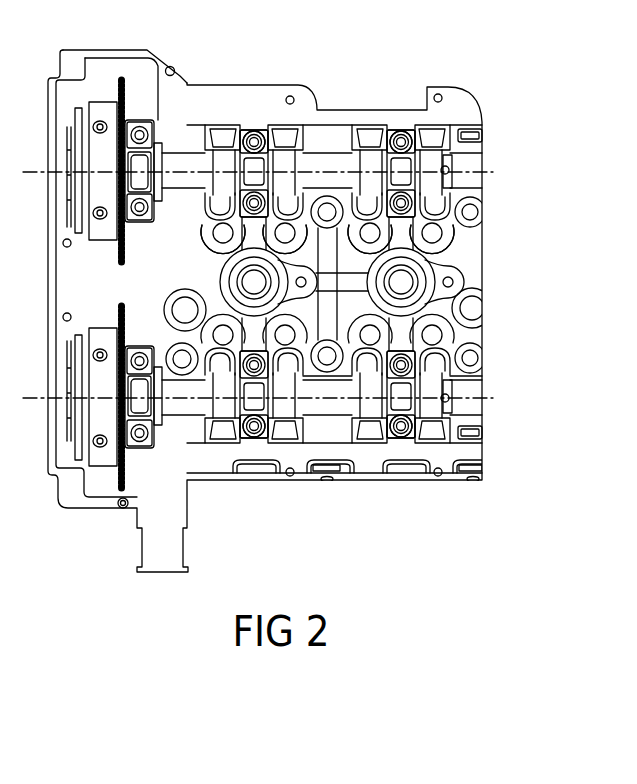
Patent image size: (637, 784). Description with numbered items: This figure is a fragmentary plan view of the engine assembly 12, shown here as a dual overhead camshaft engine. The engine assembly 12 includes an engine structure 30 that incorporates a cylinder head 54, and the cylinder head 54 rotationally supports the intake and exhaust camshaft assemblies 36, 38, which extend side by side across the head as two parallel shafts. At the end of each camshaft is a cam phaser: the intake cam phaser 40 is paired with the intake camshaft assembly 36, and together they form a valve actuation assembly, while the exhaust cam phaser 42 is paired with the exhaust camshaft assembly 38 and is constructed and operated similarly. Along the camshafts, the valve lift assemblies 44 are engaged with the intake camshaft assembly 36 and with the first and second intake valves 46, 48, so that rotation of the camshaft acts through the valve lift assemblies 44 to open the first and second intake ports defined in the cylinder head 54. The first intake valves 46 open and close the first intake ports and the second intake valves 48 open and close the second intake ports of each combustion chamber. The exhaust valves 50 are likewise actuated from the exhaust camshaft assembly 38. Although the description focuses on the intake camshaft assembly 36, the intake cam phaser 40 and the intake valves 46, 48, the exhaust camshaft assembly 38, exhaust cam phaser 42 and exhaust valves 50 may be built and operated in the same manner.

The engine assembly 12 is at (486, 101).
The engine structure 30 is at (267, 83).
The intake camshaft assembly 36 is at (481, 371).
The exhaust camshaft assembly 38 is at (483, 146).
The intake cam phaser 40 is at (105, 467).
The exhaust cam phaser 42 is at (107, 100).
The valve lift assembly 44 is at (259, 128).
The first intake valve 46 is at (208, 420).
The second intake valve 48 is at (308, 377).
The exhaust valve 50 is at (220, 225).
The cylinder head 54 is at (214, 85).